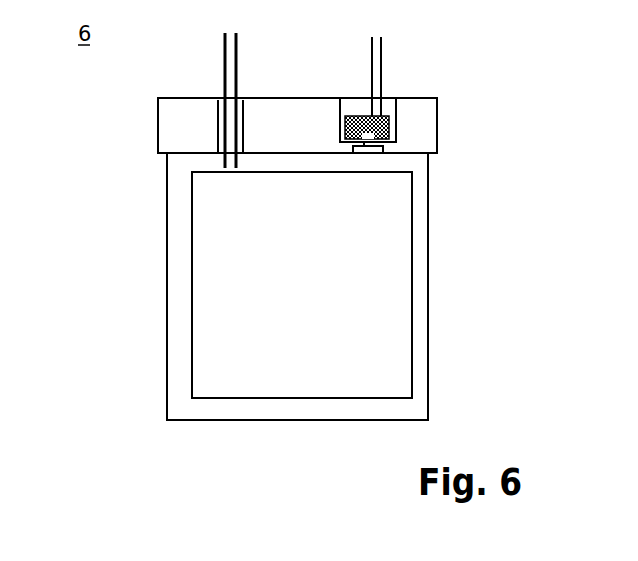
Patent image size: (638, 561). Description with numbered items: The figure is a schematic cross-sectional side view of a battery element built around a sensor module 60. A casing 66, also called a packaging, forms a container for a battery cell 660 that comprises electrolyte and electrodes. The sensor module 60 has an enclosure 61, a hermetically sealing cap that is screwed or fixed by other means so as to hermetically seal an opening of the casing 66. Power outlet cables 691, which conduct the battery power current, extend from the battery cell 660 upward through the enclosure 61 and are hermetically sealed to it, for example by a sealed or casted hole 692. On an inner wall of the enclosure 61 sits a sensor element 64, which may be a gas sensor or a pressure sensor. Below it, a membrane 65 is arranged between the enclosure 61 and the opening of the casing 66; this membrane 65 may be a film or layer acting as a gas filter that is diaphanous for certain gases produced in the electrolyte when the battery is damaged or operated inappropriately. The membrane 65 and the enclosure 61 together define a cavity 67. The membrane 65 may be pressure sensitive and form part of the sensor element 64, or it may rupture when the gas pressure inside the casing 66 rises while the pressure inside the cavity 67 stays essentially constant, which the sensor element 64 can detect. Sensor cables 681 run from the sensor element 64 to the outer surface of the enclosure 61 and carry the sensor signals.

The sensor module 60 is at (147, 127).
The enclosure 61 is at (432, 110).
The sensor element 64 is at (363, 118).
The membrane 65 is at (372, 148).
The casing 66 is at (428, 247).
The cavity 67 is at (364, 140).
The battery cell 660 is at (313, 295).
The sensor cables 681 is at (382, 62).
The power outlet cables 691 is at (238, 62).
The sealed or casted hole 692 is at (224, 98).